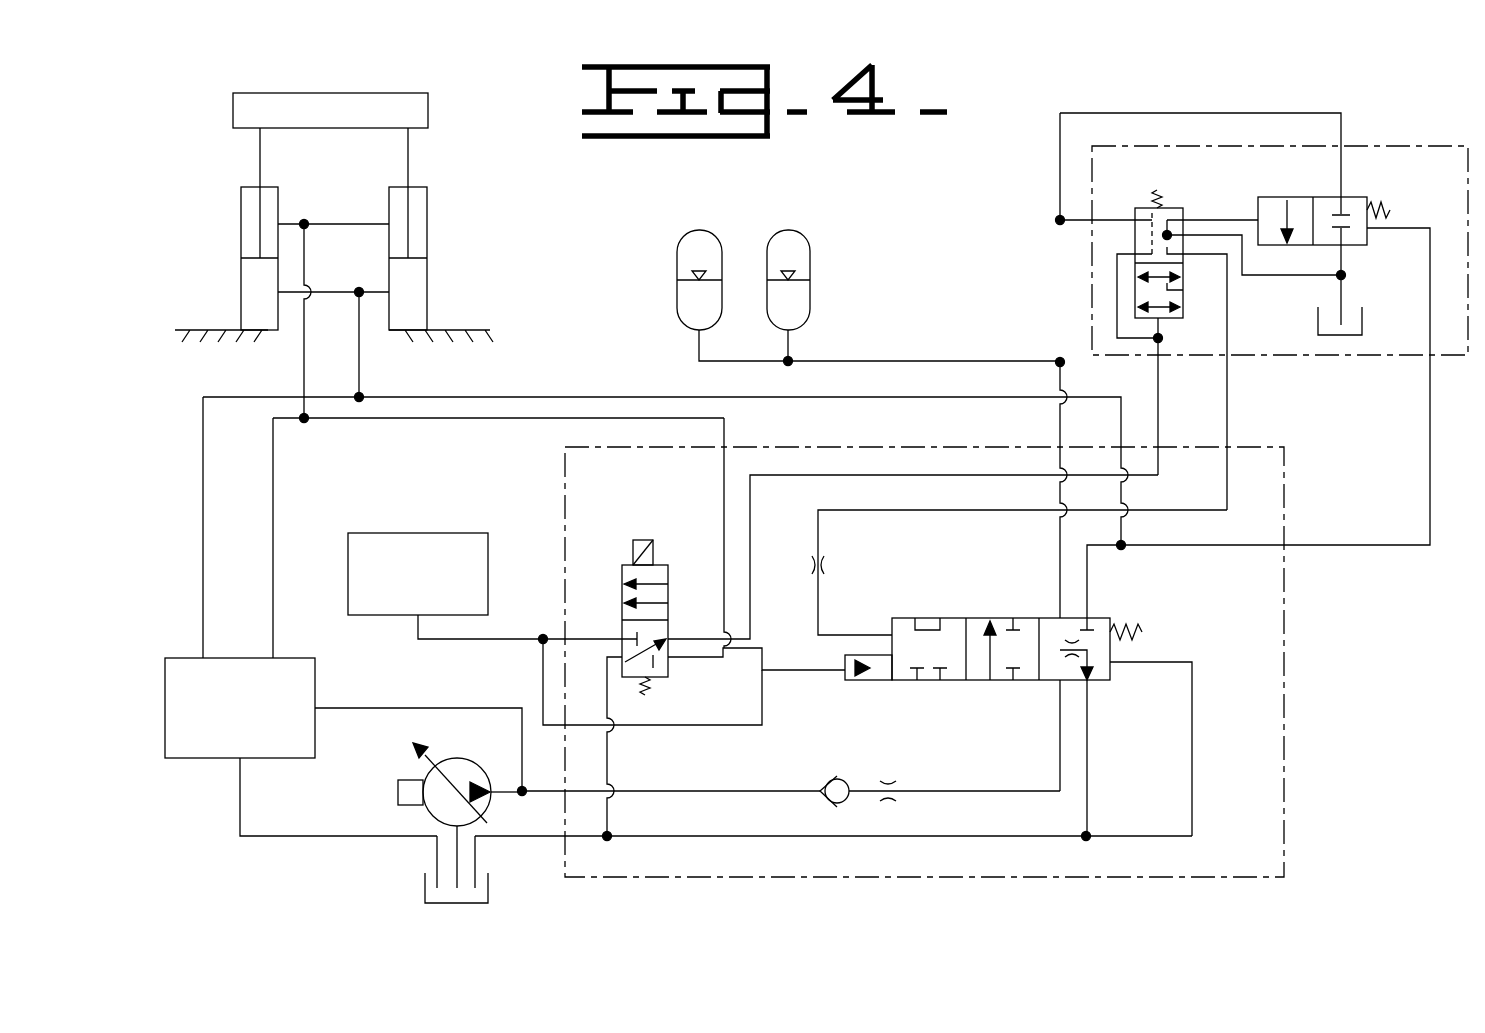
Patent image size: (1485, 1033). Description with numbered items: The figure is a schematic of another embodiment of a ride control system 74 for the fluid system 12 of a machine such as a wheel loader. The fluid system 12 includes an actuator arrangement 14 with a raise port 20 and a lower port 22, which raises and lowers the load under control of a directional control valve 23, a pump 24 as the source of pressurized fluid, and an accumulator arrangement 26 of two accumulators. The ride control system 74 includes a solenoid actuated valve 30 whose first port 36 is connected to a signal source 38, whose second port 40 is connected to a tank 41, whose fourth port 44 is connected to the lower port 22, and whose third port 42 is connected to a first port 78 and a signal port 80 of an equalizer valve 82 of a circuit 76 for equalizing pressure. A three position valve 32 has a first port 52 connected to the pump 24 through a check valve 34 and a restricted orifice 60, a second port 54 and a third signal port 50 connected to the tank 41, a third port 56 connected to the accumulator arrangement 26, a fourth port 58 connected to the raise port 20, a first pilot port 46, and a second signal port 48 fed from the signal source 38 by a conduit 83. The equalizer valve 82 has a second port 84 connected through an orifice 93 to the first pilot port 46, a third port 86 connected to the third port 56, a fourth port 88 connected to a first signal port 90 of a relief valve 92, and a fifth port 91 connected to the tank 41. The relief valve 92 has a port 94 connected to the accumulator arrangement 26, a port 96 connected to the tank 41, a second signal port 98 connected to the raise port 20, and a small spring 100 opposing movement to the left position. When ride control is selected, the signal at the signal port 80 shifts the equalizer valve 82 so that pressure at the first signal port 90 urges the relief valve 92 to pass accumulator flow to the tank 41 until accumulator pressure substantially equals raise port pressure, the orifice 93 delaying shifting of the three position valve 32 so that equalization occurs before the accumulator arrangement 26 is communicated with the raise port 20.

The fluid system 12 is at (968, 694).
The actuator arrangement 14 is at (440, 219).
The raise port 20 is at (329, 291).
The lower port 22 is at (340, 224).
The directional control valve 23 is at (315, 683).
The pump 24 is at (448, 758).
The accumulator arrangement 26 is at (825, 247).
The solenoid actuated valve 30 is at (668, 672).
The three position valve 32 is at (1110, 672).
The check valve 34 is at (830, 778).
The first port 36 is at (622, 637).
The signal source 38 is at (393, 533).
The second port 40 is at (607, 690).
The tank 41 is at (1363, 312).
The third port 42 is at (668, 640).
The fourth port 44 is at (705, 665).
The first pilot port 46 is at (1004, 656).
The second signal port 48 is at (867, 683).
The third signal port 50 is at (1163, 662).
The first port 52 is at (1060, 730).
The second port 54 is at (1087, 770).
The third port 56 is at (1060, 568).
The fourth port 58 is at (1087, 585).
The restricted orifice 60 is at (893, 783).
The ride control system 74 is at (1300, 764).
The circuit 76 is at (1445, 360).
The first port 78 is at (1135, 345).
The signal port 80 is at (1160, 338).
The equalizer valve 82 is at (1162, 208).
The conduit 83 is at (683, 725).
The second port 84 is at (1227, 297).
The third port 86 is at (1110, 219).
The fourth port 88 is at (1210, 220).
The first signal port 90 is at (1242, 242).
The fifth port 91 is at (1180, 235).
The relief valve 92 is at (1356, 197).
The orifice 93 is at (815, 565).
The port 94 is at (1340, 182).
The port 96 is at (1340, 290).
The second signal port 98 is at (1412, 230).
The small spring 100 is at (1390, 205).